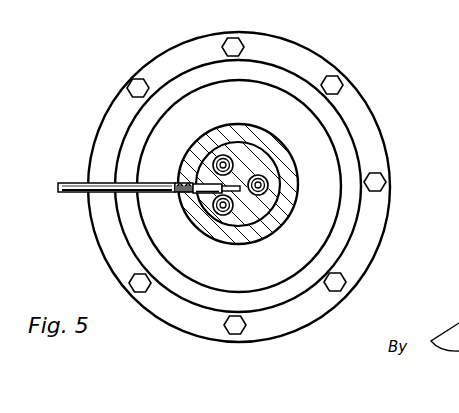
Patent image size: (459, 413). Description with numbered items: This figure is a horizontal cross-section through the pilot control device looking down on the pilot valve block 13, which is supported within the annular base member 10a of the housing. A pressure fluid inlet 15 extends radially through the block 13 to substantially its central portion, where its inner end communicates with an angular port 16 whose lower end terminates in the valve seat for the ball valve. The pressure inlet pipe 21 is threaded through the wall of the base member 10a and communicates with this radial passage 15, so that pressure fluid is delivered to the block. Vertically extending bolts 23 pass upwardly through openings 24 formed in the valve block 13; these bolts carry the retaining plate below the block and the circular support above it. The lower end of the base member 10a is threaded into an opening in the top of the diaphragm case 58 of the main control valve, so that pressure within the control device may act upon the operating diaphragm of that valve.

The annular base member 10a is at (286, 168).
The pilot valve block 13 is at (200, 212).
The pressure fluid inlet 15 is at (205, 194).
The angular port 16 is at (243, 200).
The pressure inlet pipe 21 is at (63, 182).
The bolts 23 is at (289, 218).
The openings 24 is at (269, 188).
The diaphragm case 58 is at (158, 208).